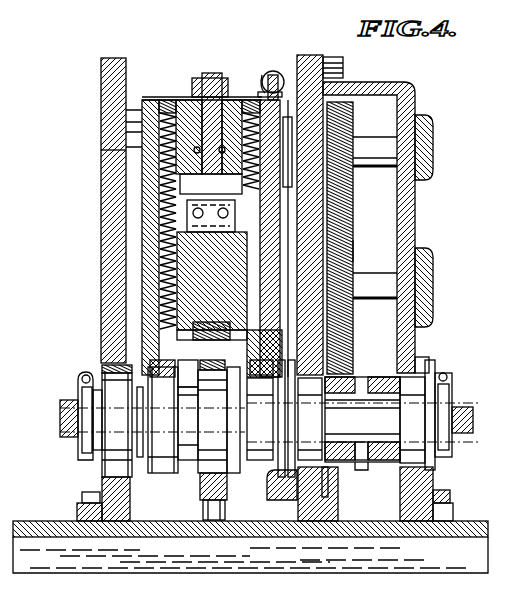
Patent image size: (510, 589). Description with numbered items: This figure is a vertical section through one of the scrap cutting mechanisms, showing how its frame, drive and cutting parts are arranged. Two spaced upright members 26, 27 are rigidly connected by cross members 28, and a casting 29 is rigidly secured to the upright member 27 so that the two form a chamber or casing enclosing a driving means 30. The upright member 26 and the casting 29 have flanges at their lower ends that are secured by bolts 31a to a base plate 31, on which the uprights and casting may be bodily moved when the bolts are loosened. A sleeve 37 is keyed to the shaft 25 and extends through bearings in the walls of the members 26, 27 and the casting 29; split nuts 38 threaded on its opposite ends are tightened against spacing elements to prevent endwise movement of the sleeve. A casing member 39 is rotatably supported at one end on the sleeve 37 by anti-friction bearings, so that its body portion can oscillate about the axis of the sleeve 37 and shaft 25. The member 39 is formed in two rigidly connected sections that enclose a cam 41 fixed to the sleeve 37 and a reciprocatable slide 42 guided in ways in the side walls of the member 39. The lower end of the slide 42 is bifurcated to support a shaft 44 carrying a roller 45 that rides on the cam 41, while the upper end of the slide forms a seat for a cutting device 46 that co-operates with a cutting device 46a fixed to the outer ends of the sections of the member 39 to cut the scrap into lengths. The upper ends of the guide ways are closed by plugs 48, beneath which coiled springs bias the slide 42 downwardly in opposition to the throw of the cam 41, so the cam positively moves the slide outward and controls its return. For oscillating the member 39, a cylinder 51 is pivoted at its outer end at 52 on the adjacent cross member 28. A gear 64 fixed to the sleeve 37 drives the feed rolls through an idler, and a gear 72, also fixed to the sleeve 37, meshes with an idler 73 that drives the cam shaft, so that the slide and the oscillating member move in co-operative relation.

The shaft 25 is at (476, 416).
The upright member 26 is at (105, 183).
The upright member 27 is at (306, 60).
The cross member 28 is at (132, 97).
The casting 29 is at (415, 212).
The driving means 30 is at (362, 238).
The base plate 31 is at (478, 522).
The bolt 31a is at (450, 500).
The sleeve 37 is at (345, 410).
The split nut 38 is at (85, 452).
The casing member 39 is at (142, 245).
The cam 41 is at (205, 478).
The slide 42 is at (165, 290).
The shaft 44 is at (175, 345).
The roller 45 is at (189, 410).
The cutting device 46 is at (200, 167).
The cutting device 46a is at (212, 204).
The plug 48 is at (172, 95).
The cylinder 51 is at (274, 71).
The pivot 52 is at (264, 88).
The gear 64 is at (375, 466).
The gear 72 is at (337, 484).
The idler 73 is at (352, 253).